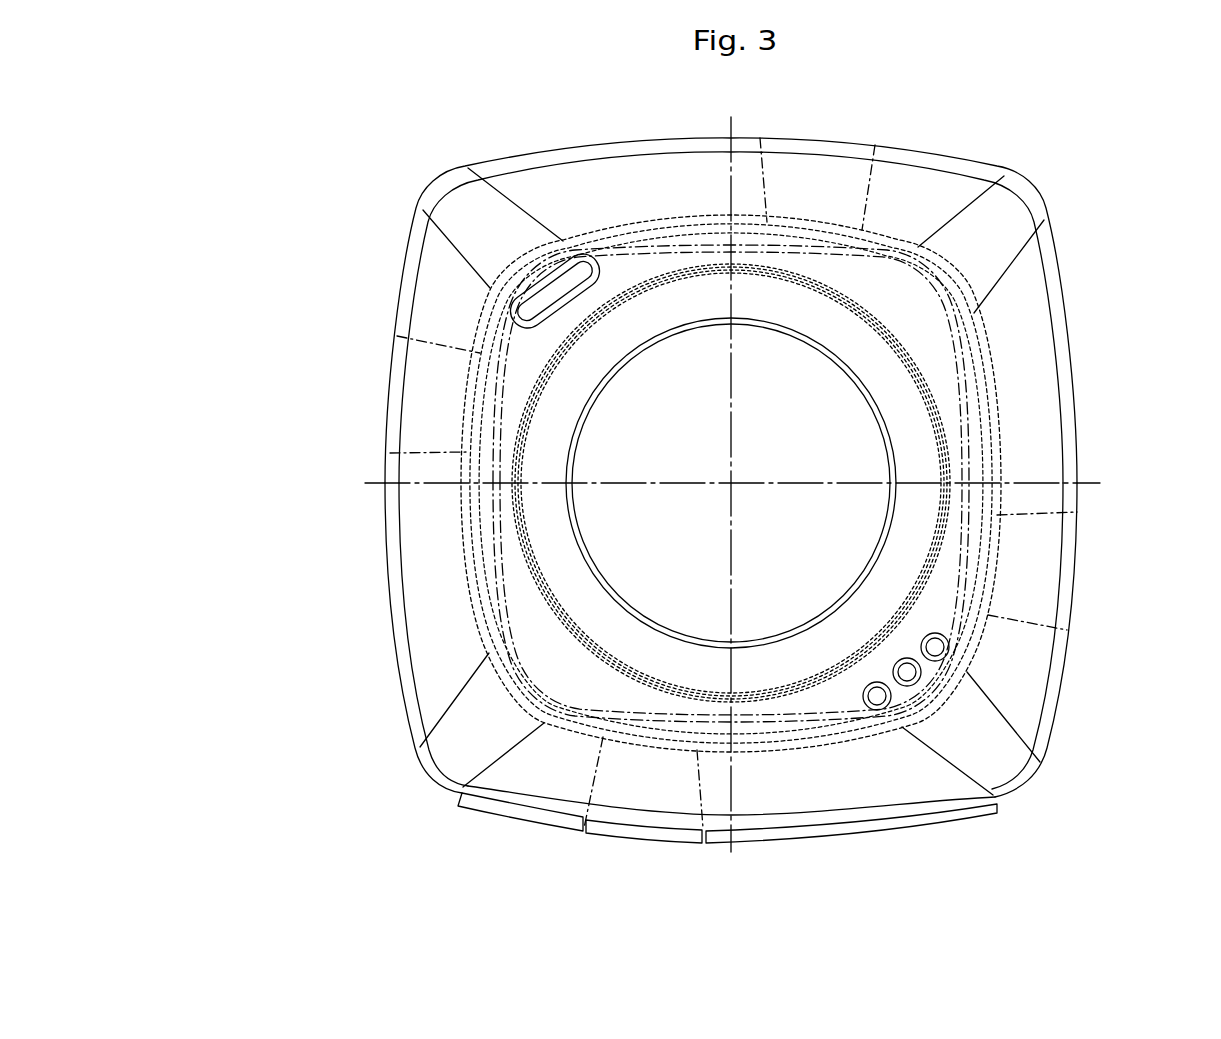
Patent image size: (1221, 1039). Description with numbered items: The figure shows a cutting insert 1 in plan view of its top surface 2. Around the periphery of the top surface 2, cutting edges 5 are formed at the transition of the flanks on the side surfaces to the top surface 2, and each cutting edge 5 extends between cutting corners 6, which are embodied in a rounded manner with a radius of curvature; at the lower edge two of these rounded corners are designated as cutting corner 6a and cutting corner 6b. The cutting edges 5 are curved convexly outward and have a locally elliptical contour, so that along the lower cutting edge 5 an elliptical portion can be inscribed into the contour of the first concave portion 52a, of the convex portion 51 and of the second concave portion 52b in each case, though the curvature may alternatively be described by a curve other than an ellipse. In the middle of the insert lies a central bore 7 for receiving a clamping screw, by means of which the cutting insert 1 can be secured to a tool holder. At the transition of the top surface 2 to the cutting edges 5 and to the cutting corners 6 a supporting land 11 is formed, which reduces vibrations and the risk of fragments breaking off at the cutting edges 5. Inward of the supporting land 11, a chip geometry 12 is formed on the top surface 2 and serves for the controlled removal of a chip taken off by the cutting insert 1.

The cutting insert 1 is at (262, 228).
The top surface 2 is at (608, 209).
The cutting edge 5 is at (513, 158).
The cutting corner 6 is at (436, 187).
The cutting corner 6a is at (432, 777).
The cutting corner 6b is at (1027, 781).
The central bore 7 is at (777, 453).
The supporting land 11 is at (1065, 425).
The chip geometry 12 is at (998, 570).
The convex portion 51 is at (641, 843).
The first concave portion 52a is at (518, 822).
The second concave portion 52b is at (852, 830).